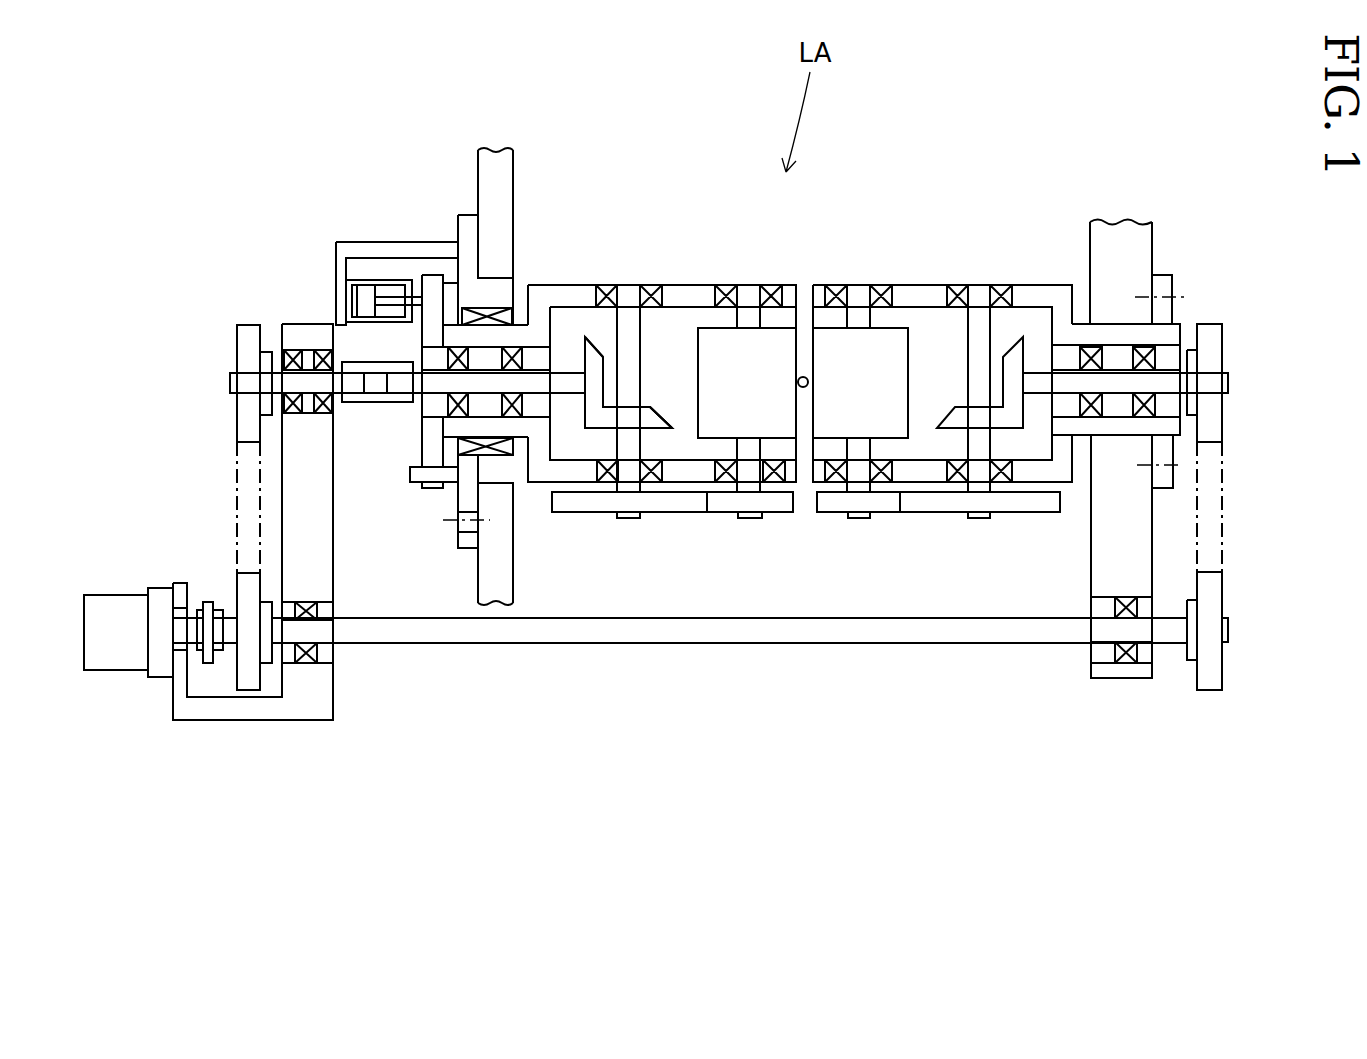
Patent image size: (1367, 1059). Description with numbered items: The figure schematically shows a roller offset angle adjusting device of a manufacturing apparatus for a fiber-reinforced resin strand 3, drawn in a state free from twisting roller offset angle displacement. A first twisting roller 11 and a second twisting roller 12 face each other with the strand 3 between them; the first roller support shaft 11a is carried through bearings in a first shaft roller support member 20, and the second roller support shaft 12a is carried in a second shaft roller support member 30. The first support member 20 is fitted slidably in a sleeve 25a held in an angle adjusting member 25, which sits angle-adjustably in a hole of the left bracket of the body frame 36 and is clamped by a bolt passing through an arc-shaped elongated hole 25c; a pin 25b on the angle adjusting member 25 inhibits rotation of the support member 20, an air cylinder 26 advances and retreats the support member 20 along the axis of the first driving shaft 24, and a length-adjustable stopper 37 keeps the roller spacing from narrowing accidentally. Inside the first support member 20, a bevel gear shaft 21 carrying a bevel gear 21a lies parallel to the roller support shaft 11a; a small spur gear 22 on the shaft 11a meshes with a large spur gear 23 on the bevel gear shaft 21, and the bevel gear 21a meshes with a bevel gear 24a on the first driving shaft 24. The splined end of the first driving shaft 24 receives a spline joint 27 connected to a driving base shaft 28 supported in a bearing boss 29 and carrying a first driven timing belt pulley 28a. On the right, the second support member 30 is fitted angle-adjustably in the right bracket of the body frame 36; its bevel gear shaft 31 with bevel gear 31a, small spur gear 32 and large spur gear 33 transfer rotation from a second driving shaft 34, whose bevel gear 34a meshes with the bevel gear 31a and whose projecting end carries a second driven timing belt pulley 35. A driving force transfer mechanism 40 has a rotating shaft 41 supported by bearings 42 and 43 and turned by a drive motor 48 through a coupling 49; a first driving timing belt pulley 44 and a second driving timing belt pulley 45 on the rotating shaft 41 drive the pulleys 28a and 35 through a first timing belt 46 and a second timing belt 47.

The fiber-reinforced resin strand 3 is at (804, 376).
The first twisting roller 11 is at (736, 395).
The first roller support shaft 11a is at (750, 292).
The second twisting roller 12 is at (846, 395).
The second roller support shaft 12a is at (858, 297).
The first shaft roller support member 20 is at (678, 272).
The bevel gear shaft 21 is at (642, 340).
The bevel gear 21a is at (645, 427).
The small spur gear 22 is at (727, 513).
The large spur gear 23 is at (593, 513).
The first driving shaft 24 is at (567, 375).
The bevel gear 24a is at (603, 352).
The angle adjusting member 25 is at (457, 228).
The sleeve 25a is at (487, 312).
The pin 25b is at (407, 482).
The elongated hole 25c is at (457, 542).
The air cylinder 26 is at (375, 280).
The spline joint 27 is at (375, 404).
The driving base shaft 28 is at (290, 380).
The first driven timing belt pulley 28a is at (237, 340).
The bearing boss 29 is at (283, 355).
The second shaft roller support member 30 is at (926, 270).
The bevel gear shaft 31 is at (980, 295).
The bevel gear 31a is at (945, 425).
The small spur gear 32 is at (833, 513).
The large spur gear 33 is at (940, 513).
The second driving shaft 34 is at (1168, 372).
The bevel gear 34a is at (1014, 337).
The second driven timing belt pulley 35 is at (1223, 323).
The body frame 36 is at (478, 172).
The length-adjustable stopper 37 is at (452, 284).
The driving force transfer mechanism 40 is at (695, 660).
The rotating shaft 41 is at (553, 643).
The bearing 42 is at (305, 663).
The bearing 43 is at (1125, 663).
The first driving timing belt pulley 44 is at (245, 690).
The second driving timing belt pulley 45 is at (1195, 680).
The first timing belt 46 is at (237, 500).
The second timing belt 47 is at (1197, 528).
The drive motor 48 is at (120, 595).
The coupling 49 is at (205, 602).